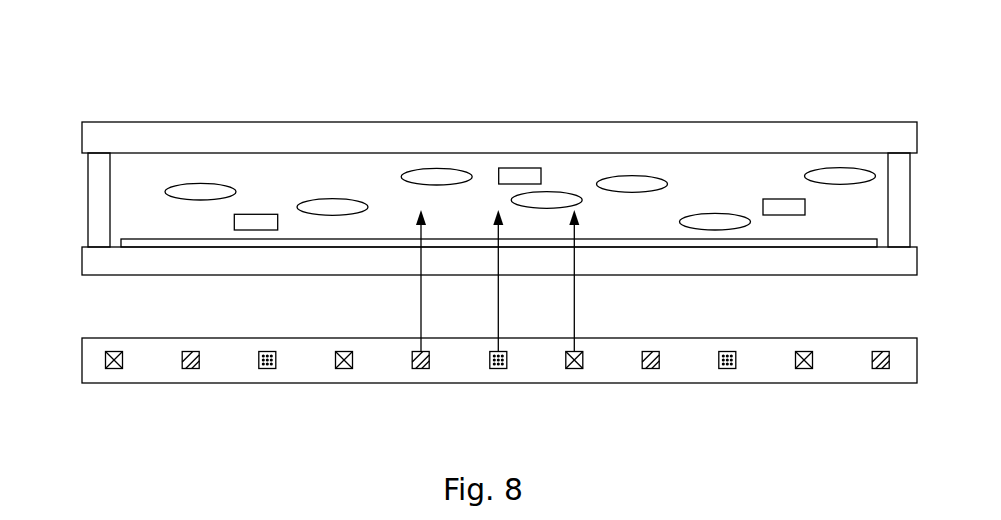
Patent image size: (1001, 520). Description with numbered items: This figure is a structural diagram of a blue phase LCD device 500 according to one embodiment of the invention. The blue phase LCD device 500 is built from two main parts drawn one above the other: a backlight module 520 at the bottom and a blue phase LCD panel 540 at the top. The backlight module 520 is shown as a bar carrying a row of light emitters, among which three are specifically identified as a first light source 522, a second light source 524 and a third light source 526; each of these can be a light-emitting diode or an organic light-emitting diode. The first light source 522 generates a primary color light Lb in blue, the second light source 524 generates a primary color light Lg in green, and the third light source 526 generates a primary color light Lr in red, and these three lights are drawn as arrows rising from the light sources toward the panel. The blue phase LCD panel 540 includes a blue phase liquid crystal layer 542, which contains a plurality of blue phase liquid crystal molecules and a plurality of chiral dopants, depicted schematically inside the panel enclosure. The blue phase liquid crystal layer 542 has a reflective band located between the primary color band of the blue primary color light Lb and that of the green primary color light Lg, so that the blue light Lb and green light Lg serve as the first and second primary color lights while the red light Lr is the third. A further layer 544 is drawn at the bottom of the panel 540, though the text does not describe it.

The blue phase LCD device 500 is at (485, 230).
The blue phase LCD panel 540 is at (478, 164).
The blue phase liquid crystal layer 542 is at (128, 196).
The bottom plate / substrate 544 is at (805, 240).
The backlight module 520 is at (506, 366).
The first light source 522 is at (423, 370).
The second light source 524 is at (497, 370).
The third light source 526 is at (573, 370).
The blue primary color light Lb is at (423, 323).
The green primary color light Lg is at (500, 323).
The red primary color light Lr is at (576, 323).